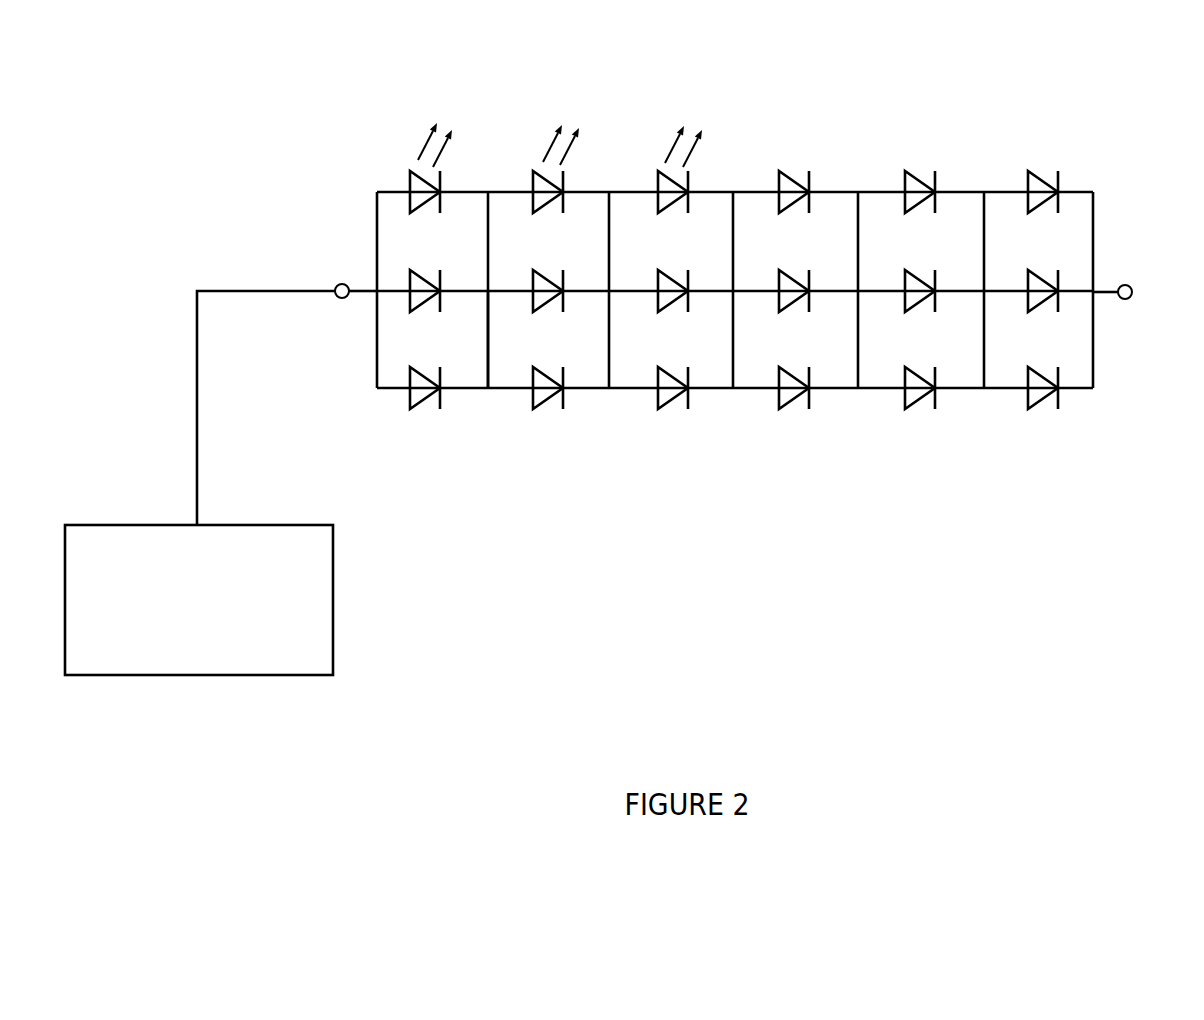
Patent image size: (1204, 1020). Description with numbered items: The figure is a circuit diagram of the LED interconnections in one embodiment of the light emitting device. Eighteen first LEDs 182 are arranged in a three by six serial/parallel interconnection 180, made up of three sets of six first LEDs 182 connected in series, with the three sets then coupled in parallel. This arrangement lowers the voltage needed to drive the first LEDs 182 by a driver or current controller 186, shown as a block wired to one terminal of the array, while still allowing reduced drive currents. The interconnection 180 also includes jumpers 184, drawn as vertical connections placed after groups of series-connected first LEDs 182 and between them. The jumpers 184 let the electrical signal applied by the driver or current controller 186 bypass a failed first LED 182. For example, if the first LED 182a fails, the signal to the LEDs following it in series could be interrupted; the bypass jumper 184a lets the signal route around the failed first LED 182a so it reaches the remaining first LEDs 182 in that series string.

The serial/parallel interconnection 180 is at (922, 130).
The first LED 182 is at (1042, 173).
The failed first LED 182a is at (412, 405).
The jumper 184 is at (492, 229).
The bypass jumper 184a is at (489, 345).
The driver or current controller 186 is at (199, 600).